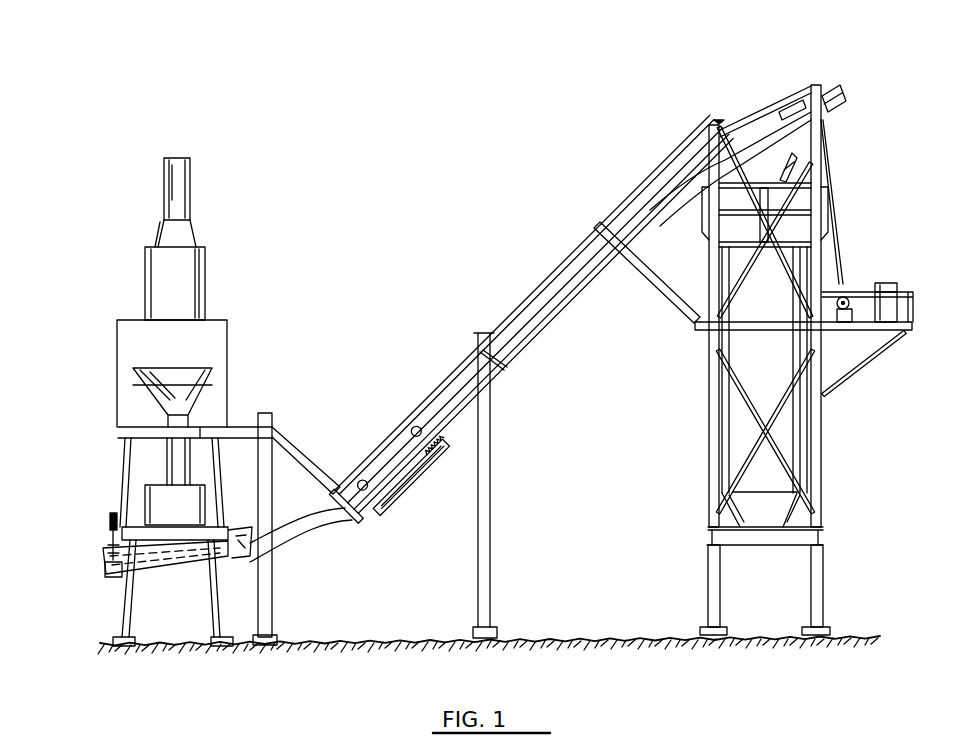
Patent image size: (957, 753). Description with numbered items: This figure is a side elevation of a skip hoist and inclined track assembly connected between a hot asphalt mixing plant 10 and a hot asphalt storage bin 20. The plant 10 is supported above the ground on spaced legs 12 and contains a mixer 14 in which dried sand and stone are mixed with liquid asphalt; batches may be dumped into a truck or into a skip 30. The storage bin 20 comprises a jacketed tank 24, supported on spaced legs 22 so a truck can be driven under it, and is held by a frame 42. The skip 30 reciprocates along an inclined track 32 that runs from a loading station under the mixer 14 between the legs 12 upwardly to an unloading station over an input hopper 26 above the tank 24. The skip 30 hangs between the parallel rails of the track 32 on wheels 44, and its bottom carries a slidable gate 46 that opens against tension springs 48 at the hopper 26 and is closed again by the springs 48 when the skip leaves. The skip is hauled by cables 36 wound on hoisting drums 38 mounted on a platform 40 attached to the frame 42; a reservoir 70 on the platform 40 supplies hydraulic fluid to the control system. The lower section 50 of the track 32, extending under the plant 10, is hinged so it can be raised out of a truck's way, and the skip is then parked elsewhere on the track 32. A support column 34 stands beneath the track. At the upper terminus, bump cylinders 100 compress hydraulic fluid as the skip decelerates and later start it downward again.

The hot asphalt mixing plant 10 is at (214, 293).
The legs 12 is at (216, 598).
The mixer 14 is at (143, 502).
The hot asphalt storage bin 20 is at (800, 343).
The legs 22 is at (810, 577).
The jacketed tank 24 is at (788, 443).
The input hopper 26 is at (792, 162).
The skip 30 is at (412, 482).
The inclined track 32 is at (533, 337).
The support column 34 is at (272, 596).
The cables 36 is at (835, 198).
The hoisting drums 38 is at (847, 297).
The platform 40 is at (898, 332).
The frame 42 is at (823, 417).
The wheels 44 is at (363, 480).
The slidable gate 46 is at (407, 497).
The tension springs 48 is at (430, 474).
The lower section of the track 50 is at (162, 568).
The reservoir 70 is at (897, 283).
The bump cylinders 100 is at (806, 100).